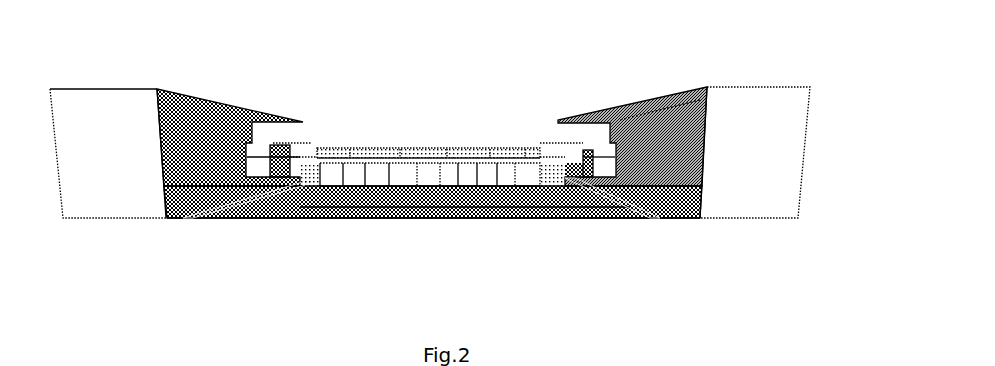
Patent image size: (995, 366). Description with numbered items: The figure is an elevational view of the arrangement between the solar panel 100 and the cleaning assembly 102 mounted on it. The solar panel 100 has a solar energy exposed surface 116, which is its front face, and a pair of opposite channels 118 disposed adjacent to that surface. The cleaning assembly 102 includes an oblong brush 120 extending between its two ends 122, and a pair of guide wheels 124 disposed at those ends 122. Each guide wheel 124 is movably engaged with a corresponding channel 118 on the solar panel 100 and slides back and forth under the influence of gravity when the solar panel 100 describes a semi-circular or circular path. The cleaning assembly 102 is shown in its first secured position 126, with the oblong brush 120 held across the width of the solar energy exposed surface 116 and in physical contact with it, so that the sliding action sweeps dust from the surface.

The solar panel 100 is at (616, 222).
The cleaning assembly 102 is at (497, 141).
The solar energy exposed surface 116 is at (256, 215).
The channels 118 is at (212, 128).
The oblong brush 120 is at (348, 148).
The ends 122 is at (288, 214).
The guide wheels 124 is at (256, 150).
The first secured position 126 is at (424, 148).